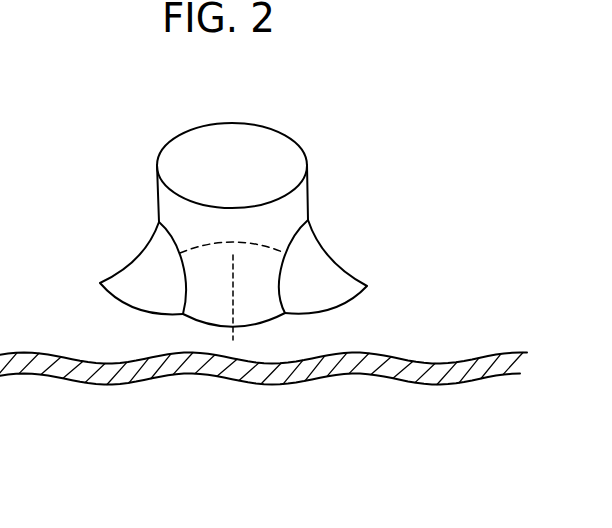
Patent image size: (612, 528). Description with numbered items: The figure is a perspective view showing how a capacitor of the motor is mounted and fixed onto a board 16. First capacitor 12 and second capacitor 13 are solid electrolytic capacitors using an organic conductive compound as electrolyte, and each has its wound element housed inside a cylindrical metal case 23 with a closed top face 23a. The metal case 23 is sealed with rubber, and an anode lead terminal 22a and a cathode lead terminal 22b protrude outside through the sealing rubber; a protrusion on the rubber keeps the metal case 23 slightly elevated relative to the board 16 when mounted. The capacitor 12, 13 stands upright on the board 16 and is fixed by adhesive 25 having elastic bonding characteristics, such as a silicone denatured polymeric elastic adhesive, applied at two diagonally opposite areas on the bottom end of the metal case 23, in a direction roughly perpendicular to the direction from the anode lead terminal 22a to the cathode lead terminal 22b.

The first capacitor 12 is at (160, 175).
The second capacitor 13 is at (242, 143).
The metal case 23 is at (250, 138).
The top surface 23a is at (232, 165).
The adhesive 25 is at (148, 282).
The cathode lead terminal 22b is at (237, 272).
The anode lead terminal 22a is at (236, 340).
The board 16 is at (412, 367).